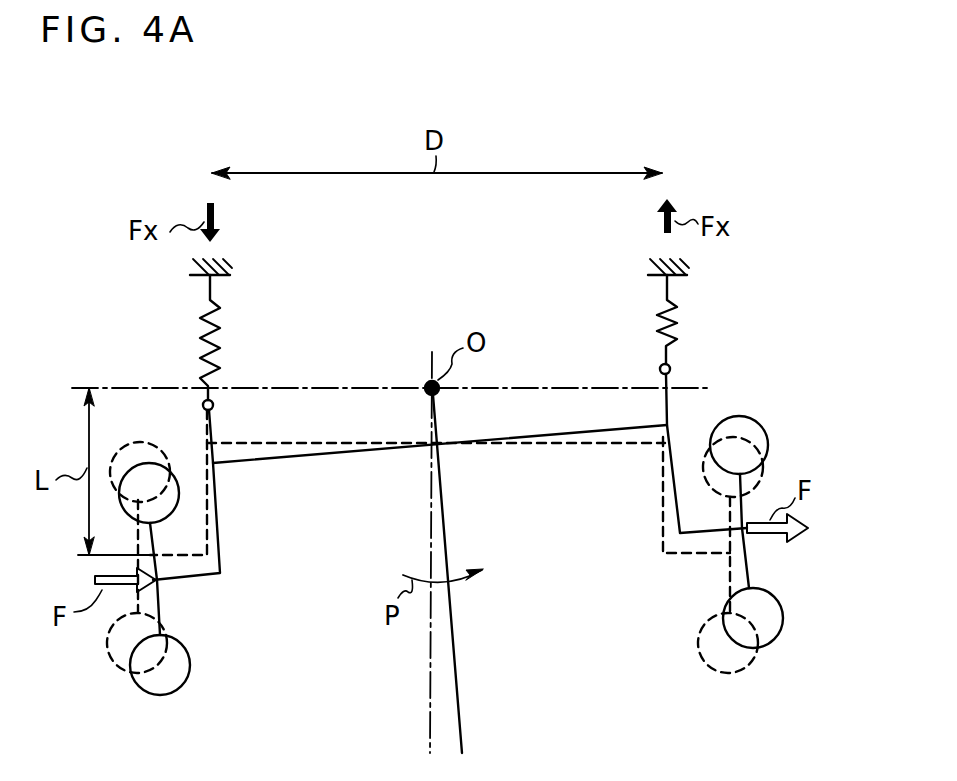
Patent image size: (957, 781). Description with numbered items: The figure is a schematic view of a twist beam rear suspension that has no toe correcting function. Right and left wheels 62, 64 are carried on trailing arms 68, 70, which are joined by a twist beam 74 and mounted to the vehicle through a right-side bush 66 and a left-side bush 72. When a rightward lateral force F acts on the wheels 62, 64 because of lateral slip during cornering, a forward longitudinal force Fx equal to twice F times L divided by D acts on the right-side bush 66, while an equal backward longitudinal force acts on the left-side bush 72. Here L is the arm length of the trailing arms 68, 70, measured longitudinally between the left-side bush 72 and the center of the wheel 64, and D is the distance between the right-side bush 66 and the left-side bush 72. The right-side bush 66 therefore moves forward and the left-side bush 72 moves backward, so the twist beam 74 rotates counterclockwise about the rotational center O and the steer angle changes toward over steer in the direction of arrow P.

The right wheel 62 is at (777, 640).
The left wheel 64 is at (186, 678).
The right-side bush 66 is at (671, 366).
The trailing arm 68 is at (674, 460).
The trailing arm 70 is at (222, 530).
The left-side bush 72 is at (203, 403).
The twist beam 74 is at (572, 438).